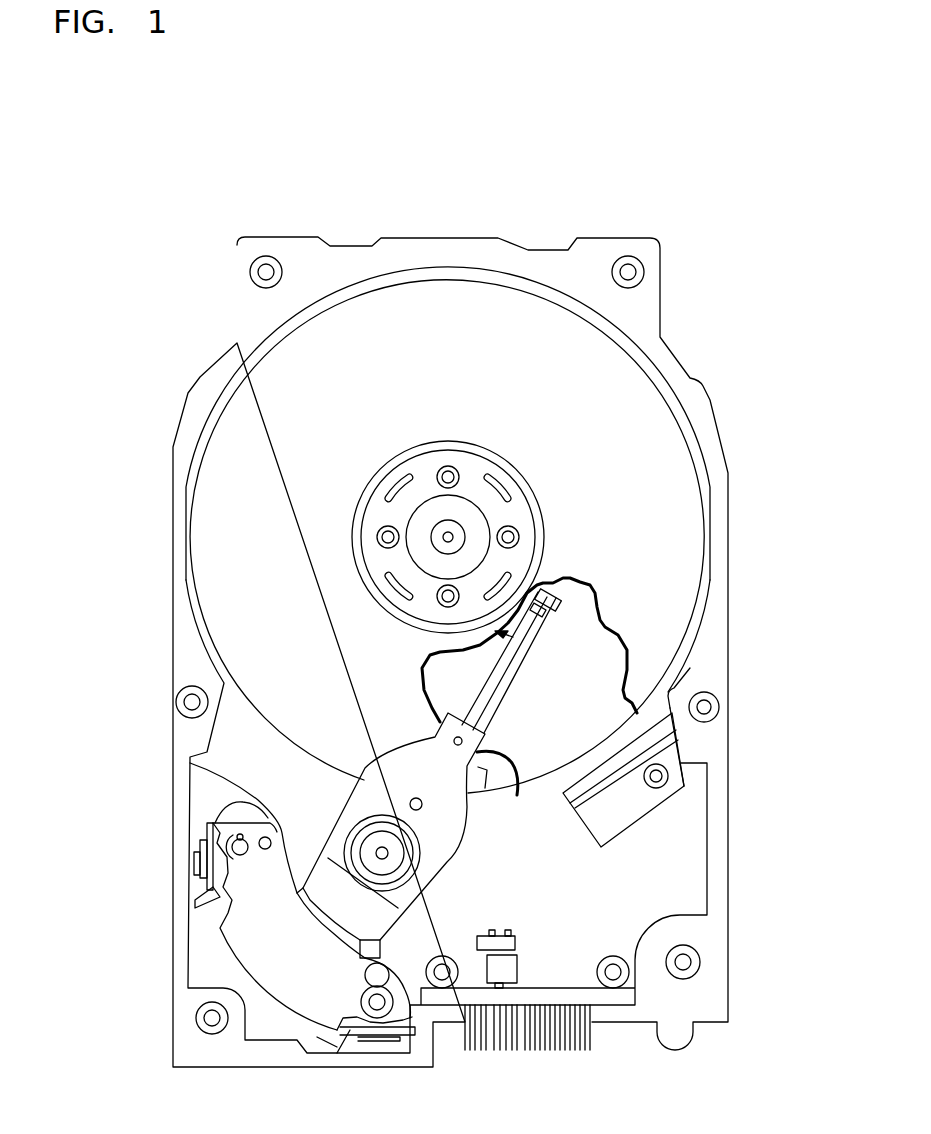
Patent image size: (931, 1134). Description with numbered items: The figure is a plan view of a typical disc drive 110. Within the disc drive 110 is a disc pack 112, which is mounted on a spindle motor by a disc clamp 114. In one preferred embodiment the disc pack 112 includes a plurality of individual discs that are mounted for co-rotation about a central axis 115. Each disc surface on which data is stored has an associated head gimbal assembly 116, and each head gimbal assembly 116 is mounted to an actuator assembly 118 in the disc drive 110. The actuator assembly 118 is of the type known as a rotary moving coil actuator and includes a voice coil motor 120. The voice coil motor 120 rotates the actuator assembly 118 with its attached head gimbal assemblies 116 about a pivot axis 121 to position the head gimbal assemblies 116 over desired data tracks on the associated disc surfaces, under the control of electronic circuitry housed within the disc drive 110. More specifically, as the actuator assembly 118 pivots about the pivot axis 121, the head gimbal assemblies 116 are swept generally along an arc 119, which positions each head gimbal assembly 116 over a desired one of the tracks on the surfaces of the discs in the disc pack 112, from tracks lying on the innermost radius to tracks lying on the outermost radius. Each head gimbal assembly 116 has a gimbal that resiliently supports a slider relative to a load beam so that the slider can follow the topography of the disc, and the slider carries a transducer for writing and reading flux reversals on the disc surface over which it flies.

The disc drive 110 is at (685, 275).
The disc pack 112 is at (499, 322).
The disc clamp 114 is at (410, 447).
The central axis 115 is at (450, 535).
The head gimbal assembly 116 is at (563, 575).
The actuator assembly 118 is at (496, 743).
The arc 119 is at (535, 653).
The voice coil motor 120 is at (192, 764).
The pivot axis 121 is at (381, 852).